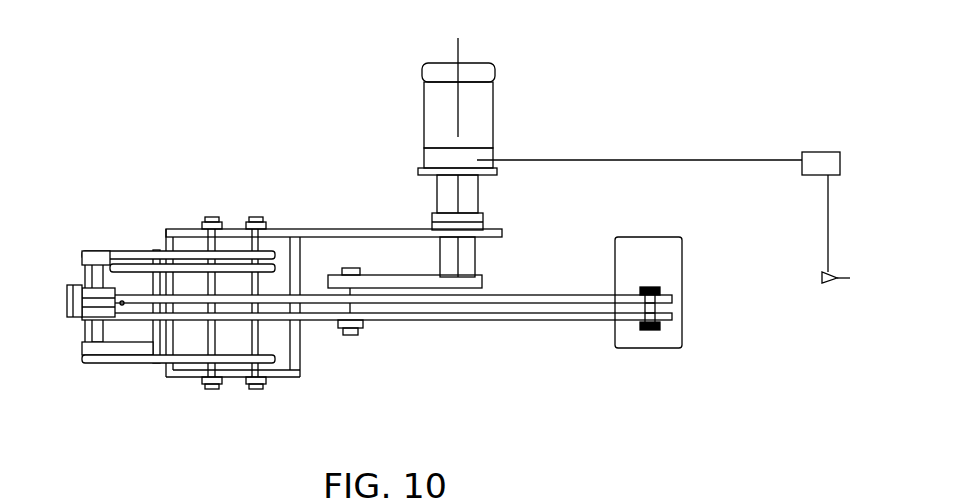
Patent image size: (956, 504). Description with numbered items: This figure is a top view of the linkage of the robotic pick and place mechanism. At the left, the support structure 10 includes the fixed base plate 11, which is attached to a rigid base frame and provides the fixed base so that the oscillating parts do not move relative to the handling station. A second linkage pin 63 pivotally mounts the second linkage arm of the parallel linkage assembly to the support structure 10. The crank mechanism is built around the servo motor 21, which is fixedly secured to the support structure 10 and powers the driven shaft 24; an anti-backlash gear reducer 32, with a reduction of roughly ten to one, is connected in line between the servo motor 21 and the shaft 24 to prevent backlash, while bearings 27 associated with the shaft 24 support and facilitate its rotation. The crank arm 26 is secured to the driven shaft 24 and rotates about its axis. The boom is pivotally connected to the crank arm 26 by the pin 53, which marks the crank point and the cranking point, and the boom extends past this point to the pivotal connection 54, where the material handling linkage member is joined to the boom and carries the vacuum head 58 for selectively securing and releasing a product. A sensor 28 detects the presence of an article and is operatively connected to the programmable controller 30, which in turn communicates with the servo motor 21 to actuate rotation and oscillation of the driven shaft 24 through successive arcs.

The support structure 10 is at (292, 265).
The fixed base plate 11 is at (183, 228).
The second linkage pin 63 is at (242, 228).
The servo motor 21 is at (440, 110).
The anti-backlash gear reducer 32 is at (450, 198).
The bearings 27 is at (467, 258).
The driven shaft 24 is at (457, 290).
The crank arm 26 is at (413, 282).
The pin 53 is at (357, 335).
The vacuum head 58 is at (667, 278).
The pivotal connection 54 is at (647, 327).
The programmable controller 30 is at (658, 212).
The sensor 28 is at (840, 280).